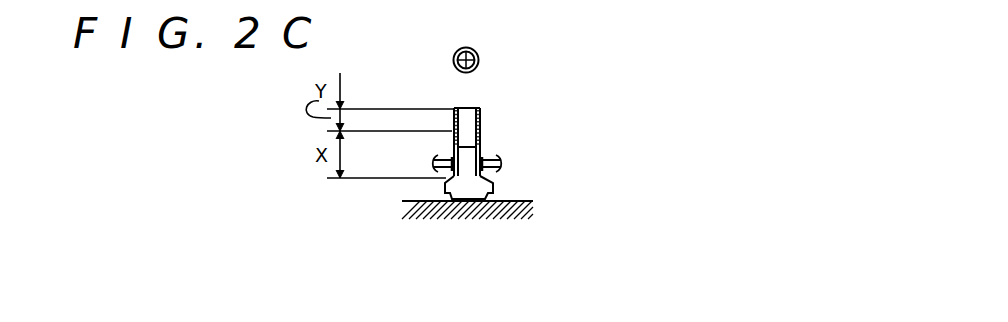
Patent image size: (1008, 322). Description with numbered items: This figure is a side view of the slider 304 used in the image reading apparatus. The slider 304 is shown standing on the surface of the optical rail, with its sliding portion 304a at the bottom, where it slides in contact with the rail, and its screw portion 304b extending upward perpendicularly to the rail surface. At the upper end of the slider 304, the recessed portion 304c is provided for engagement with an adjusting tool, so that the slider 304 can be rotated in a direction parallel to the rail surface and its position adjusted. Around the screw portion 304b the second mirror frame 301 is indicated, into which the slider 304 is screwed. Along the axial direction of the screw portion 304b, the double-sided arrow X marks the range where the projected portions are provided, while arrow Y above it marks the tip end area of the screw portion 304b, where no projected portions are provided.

The slider 304 is at (465, 180).
The sliding portion 304a is at (453, 200).
The screw portion 304b is at (482, 125).
The recessed portion 304c is at (462, 107).
The second mirror frame 301 is at (500, 162).